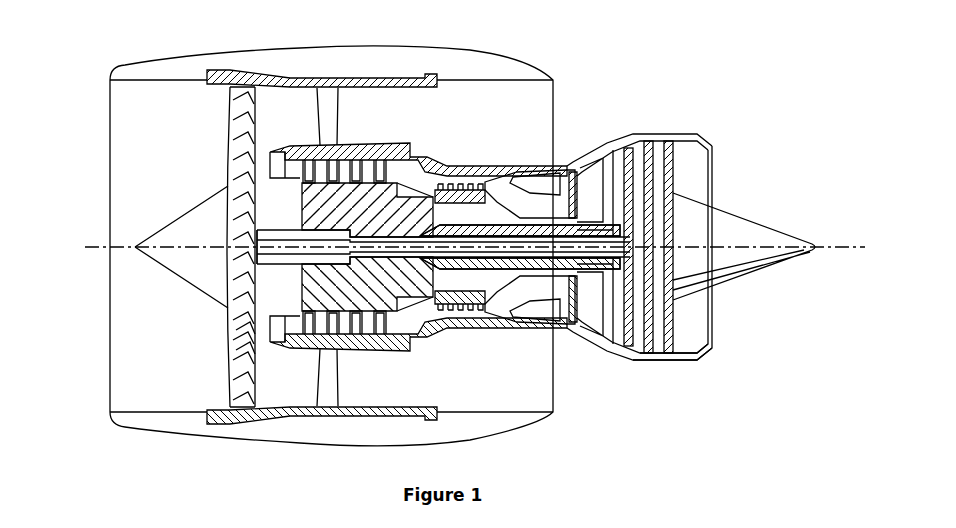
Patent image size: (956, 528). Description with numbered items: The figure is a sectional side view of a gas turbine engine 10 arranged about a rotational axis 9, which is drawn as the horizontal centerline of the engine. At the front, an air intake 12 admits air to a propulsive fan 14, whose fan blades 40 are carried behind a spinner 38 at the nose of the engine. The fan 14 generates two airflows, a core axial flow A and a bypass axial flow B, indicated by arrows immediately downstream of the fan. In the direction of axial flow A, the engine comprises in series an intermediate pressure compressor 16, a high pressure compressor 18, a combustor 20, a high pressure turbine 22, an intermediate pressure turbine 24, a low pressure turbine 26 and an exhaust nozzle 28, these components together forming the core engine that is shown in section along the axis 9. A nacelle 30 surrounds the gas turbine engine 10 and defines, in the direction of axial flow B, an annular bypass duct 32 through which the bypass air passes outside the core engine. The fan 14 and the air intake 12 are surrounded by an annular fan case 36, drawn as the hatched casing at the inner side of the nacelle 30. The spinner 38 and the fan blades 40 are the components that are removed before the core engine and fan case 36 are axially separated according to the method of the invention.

The rotational axis 9 is at (840, 250).
The gas turbine engine 10 is at (116, 43).
The air intake 12 is at (108, 128).
The propulsive fan 14 is at (233, 123).
The intermediate pressure compressor 16 is at (345, 167).
The high pressure compressor 18 is at (461, 180).
The combustor 20 is at (525, 178).
The high pressure turbine 22 is at (567, 180).
The intermediate pressure turbine 24 is at (618, 152).
The low pressure turbine 26 is at (673, 147).
The exhaust nozzle 28 is at (713, 177).
The nacelle 30 is at (395, 77).
The bypass duct 32 is at (424, 126).
The annular fan case 36 is at (247, 72).
The spinner 38 is at (203, 258).
The fan blades 40 is at (240, 348).
The axial flow A is at (272, 170).
The axial flow B is at (272, 130).